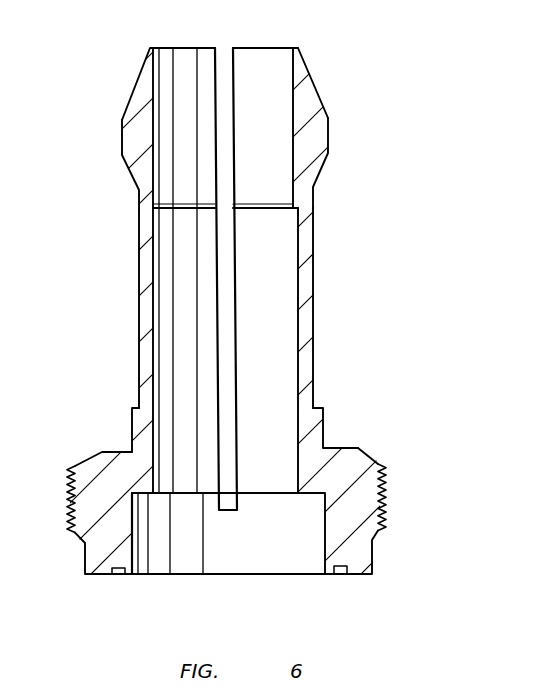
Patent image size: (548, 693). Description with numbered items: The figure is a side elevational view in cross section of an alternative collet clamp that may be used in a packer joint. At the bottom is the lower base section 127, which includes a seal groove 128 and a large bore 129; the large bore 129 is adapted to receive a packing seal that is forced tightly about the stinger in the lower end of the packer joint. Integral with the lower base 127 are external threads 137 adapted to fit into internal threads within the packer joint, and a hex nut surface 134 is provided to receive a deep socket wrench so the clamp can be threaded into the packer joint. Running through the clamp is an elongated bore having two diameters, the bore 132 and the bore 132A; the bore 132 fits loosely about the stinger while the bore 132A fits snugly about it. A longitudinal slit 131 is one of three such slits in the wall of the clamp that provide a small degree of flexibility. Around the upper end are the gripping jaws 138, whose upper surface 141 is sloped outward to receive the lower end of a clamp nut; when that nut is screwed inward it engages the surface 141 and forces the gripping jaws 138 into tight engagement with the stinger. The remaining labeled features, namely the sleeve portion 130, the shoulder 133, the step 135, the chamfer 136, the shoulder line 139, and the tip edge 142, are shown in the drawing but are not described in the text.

The lower base section 127 is at (372, 552).
The seal groove 128 is at (117, 578).
The large bore 129 is at (240, 572).
The sleeve 130 is at (140, 277).
The longitudinal slit 131 is at (220, 60).
The bore 132 is at (180, 315).
The bore 132A is at (182, 138).
The left shoulder 133 is at (138, 408).
The hex nut surface 134 is at (323, 413).
The step 135 is at (338, 447).
The chamfer 136 is at (368, 456).
The external threads 137 is at (390, 492).
The gripping jaw 138 is at (328, 125).
The shoulder line 139 is at (293, 210).
The upper surface 141 is at (305, 62).
The tip edge 142 is at (150, 48).